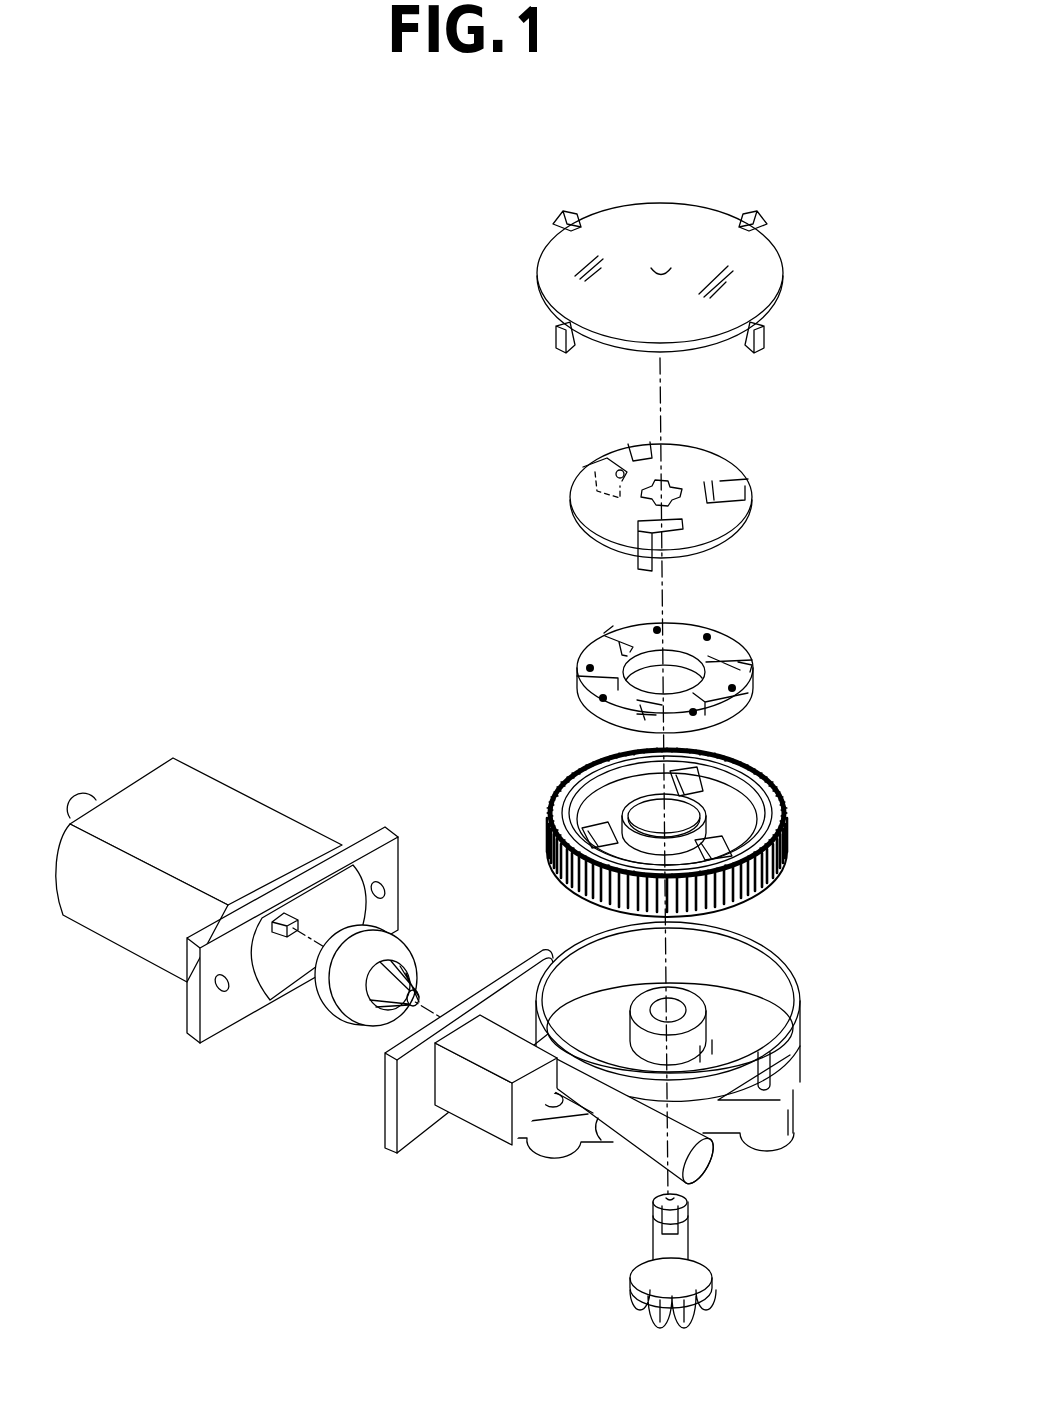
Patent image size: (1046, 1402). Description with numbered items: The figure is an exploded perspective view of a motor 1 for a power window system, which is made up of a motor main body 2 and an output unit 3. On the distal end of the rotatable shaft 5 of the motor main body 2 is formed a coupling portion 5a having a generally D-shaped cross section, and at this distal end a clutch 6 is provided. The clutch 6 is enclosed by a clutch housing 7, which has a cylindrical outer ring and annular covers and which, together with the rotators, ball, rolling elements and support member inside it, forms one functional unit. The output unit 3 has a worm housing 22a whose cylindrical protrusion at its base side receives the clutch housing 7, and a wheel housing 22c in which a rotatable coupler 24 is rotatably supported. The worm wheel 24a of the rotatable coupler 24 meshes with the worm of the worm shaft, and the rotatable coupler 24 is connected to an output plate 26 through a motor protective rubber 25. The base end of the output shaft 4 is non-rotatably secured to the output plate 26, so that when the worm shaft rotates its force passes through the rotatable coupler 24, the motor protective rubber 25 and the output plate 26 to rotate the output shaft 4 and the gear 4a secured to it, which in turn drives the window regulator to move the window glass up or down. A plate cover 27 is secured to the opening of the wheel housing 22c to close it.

The motor 1 is at (264, 917).
The motor main body 2 is at (348, 818).
The output unit 3 is at (329, 910).
The output shaft 4 is at (763, 1261).
The gear 4a is at (703, 1303).
The rotatable shaft 5 is at (278, 937).
The coupling portion 5a is at (287, 917).
The clutch 6 is at (349, 1020).
The clutch housing 7 is at (325, 997).
The worm housing 22a is at (632, 1138).
The wheel housing 22c is at (805, 1032).
The rotatable coupler 24 is at (717, 835).
The worm wheel 24a is at (577, 887).
The motor protective rubber 25 is at (803, 660).
The output plate 26 is at (785, 455).
The plate cover 27 is at (815, 270).